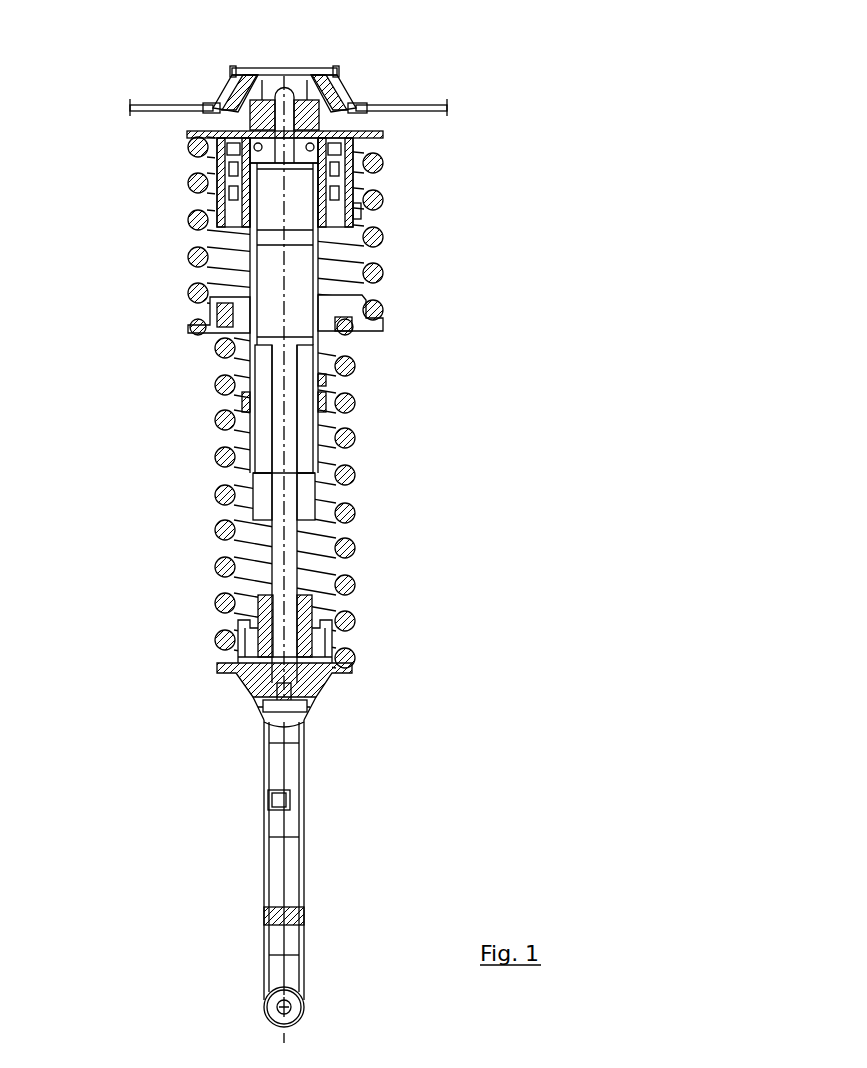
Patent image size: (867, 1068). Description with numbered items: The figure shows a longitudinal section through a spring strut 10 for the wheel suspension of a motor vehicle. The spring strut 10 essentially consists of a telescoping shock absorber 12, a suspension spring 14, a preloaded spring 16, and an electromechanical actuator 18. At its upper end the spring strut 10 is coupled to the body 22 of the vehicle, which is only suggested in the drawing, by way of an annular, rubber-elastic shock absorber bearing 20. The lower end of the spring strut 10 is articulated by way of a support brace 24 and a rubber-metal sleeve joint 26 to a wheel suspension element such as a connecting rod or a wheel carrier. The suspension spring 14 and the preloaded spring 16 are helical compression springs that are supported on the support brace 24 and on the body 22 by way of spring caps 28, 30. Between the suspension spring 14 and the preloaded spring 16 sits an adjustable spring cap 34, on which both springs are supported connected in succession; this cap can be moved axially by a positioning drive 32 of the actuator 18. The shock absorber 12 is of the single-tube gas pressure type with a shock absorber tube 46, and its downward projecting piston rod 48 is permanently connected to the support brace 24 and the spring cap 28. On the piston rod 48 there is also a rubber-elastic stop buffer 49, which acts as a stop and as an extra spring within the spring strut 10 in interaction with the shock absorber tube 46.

The spring strut 10 is at (80, 368).
The telescoping shock absorber 12 is at (247, 507).
The suspension spring 14 is at (353, 551).
The preloaded spring 16 is at (385, 272).
The electromechanical actuator 18 is at (364, 216).
The shock absorber bearing 20 is at (349, 92).
The body 22 is at (155, 105).
The support brace 24 is at (265, 821).
The rubber-metal sleeve joint 26 is at (263, 1013).
The spring cap 28 is at (231, 664).
The spring cap 30 is at (189, 130).
The positioning drive 32 is at (330, 380).
The adjustable spring cap 34 is at (197, 336).
The shock absorber tube 46 is at (353, 492).
The piston rod 48 is at (262, 588).
The stop buffer 49 is at (322, 598).